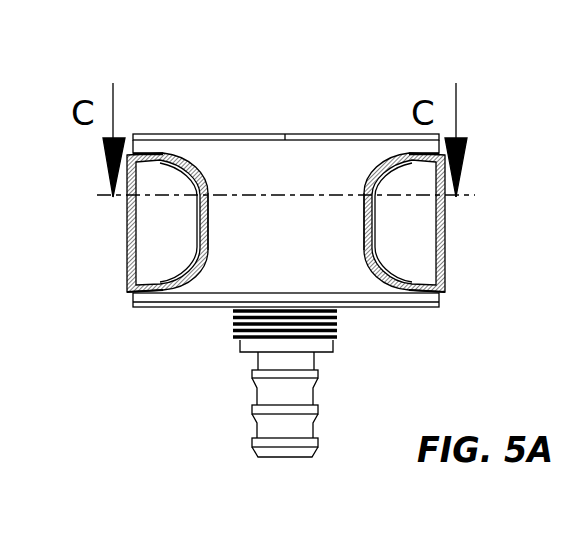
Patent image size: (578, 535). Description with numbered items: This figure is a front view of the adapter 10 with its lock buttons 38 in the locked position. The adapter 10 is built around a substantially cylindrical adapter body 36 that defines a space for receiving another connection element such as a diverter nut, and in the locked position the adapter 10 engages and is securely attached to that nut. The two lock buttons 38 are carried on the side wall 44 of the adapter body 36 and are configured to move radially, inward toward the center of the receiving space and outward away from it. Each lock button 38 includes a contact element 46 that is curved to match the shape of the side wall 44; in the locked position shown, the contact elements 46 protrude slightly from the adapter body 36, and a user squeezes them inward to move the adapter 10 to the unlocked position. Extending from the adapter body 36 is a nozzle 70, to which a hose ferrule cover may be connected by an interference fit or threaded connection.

The adapter 10 is at (218, 74).
The adapter body 36 is at (209, 290).
The lock buttons 38 is at (127, 240).
The side wall 44 is at (293, 248).
The contact elements 46 is at (145, 272).
The nozzle 70 is at (318, 376).